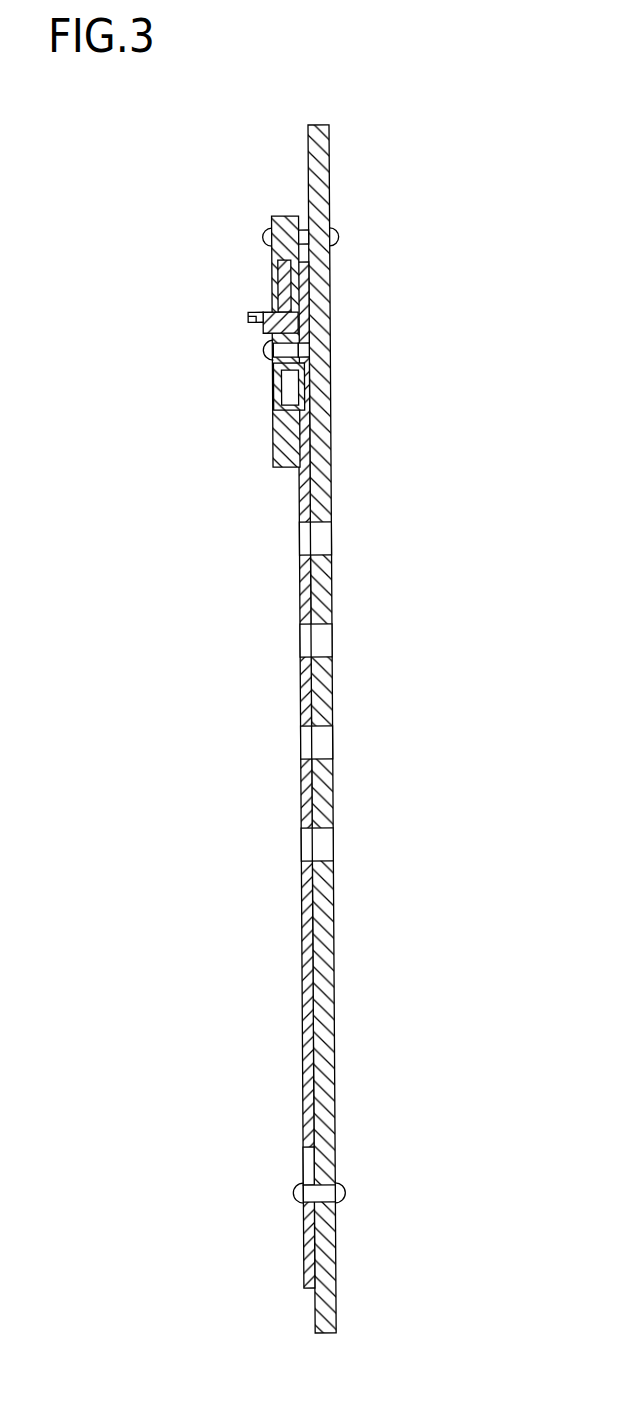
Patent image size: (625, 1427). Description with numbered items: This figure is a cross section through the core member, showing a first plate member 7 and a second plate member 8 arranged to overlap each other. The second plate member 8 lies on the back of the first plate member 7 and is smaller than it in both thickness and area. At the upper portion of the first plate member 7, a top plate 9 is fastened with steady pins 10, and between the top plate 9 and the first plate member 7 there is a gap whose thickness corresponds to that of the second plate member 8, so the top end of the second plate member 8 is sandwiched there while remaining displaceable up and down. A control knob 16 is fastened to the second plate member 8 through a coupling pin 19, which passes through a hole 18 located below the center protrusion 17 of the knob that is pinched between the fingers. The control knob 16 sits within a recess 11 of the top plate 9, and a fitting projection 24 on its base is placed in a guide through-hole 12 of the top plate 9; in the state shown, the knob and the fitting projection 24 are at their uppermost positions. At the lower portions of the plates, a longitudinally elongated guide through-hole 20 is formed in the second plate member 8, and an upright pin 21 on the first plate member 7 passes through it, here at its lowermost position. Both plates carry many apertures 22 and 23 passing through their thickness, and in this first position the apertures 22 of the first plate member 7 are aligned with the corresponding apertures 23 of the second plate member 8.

The first plate member 7 is at (324, 145).
The second plate member 8 is at (302, 278).
The top plate 9 is at (272, 220).
The steady pins 10 is at (262, 238).
The recess 11 is at (273, 412).
The guide through-hole 12 is at (278, 392).
The control knob 16 is at (271, 278).
The center protrusion 17 is at (250, 318).
The hole 18 is at (300, 338).
The coupling pin 19 is at (262, 354).
The guide through-hole 20 is at (305, 1164).
The upright pin 21 is at (292, 1193).
The apertures 22 is at (320, 537).
The apertures 23 is at (303, 538).
The fitting projection 24 is at (300, 312).